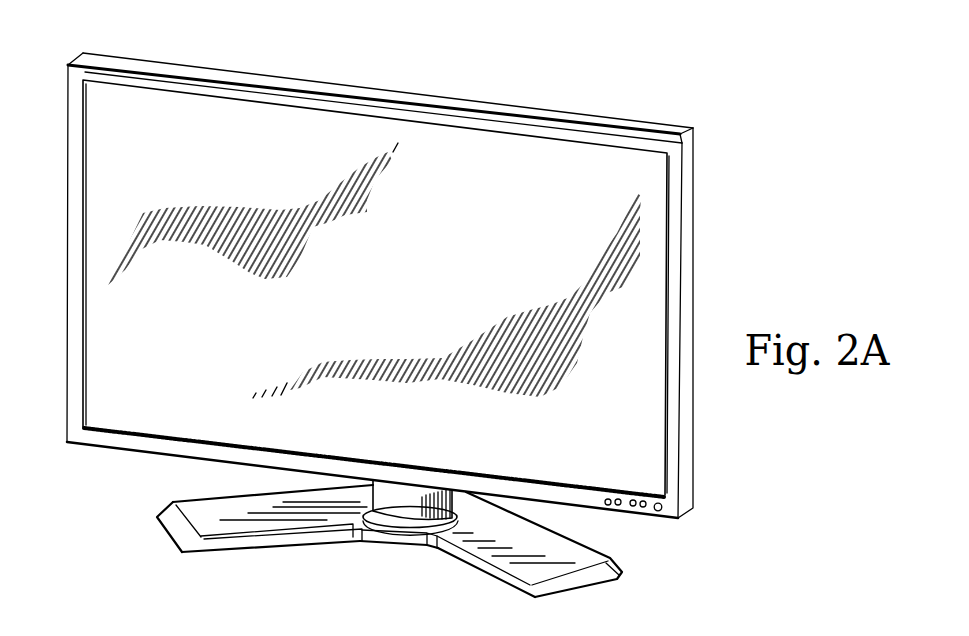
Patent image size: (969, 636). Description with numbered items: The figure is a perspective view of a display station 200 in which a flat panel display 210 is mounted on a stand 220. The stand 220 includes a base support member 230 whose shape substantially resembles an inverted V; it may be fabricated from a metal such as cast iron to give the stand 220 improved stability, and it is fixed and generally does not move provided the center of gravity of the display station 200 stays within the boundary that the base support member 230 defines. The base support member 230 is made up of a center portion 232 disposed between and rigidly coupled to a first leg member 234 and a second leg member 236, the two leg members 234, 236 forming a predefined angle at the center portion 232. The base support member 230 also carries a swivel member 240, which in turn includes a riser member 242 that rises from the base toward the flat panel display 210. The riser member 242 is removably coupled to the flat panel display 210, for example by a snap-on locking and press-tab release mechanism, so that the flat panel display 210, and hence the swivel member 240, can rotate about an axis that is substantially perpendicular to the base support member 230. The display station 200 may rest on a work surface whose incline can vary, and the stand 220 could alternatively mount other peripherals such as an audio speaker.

The display station 200 is at (577, 80).
The flat panel display 210 is at (163, 66).
The stand 220 is at (138, 538).
The base support member 230 is at (238, 560).
The center portion 232 is at (380, 538).
The first leg member 234 is at (197, 507).
The second leg member 236 is at (566, 552).
The swivel member 240 is at (407, 523).
The riser member 242 is at (406, 500).